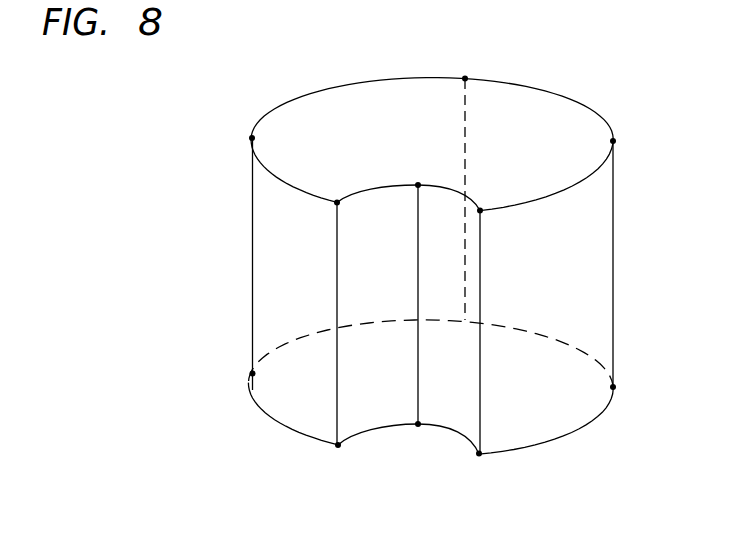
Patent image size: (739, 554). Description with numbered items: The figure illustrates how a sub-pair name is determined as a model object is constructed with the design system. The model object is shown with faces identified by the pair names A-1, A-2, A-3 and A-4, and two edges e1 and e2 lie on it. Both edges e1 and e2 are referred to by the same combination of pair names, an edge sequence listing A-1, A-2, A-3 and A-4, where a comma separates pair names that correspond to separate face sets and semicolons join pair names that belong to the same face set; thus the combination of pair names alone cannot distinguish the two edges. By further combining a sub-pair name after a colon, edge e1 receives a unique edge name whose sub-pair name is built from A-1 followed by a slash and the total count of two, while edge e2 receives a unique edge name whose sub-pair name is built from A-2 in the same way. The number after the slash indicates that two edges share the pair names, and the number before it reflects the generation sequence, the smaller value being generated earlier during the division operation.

The pair name A-4 is at (524, 112).
The pair name A-1 is at (592, 262).
The pair name A-2 is at (380, 405).
The pair name A-3 is at (557, 398).
The edge e1 is at (341, 274).
The edge e2 is at (485, 276).